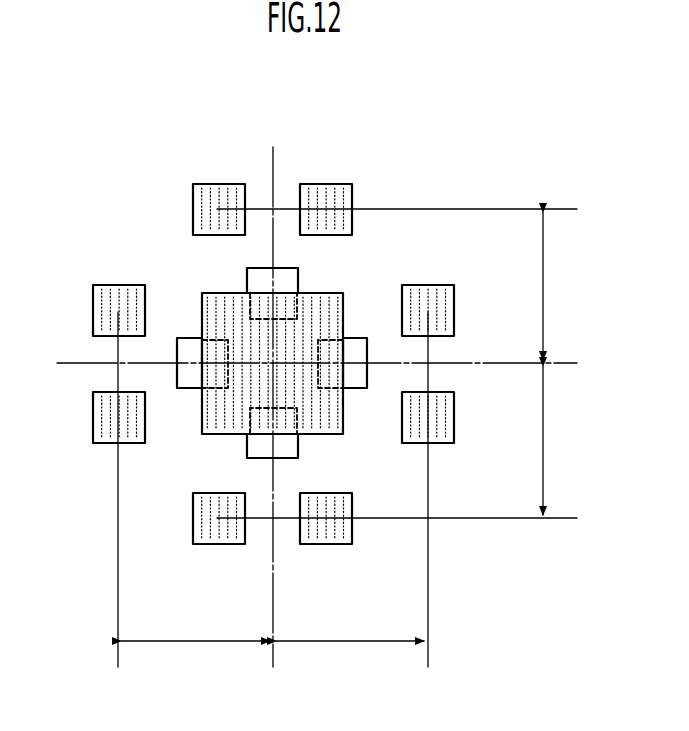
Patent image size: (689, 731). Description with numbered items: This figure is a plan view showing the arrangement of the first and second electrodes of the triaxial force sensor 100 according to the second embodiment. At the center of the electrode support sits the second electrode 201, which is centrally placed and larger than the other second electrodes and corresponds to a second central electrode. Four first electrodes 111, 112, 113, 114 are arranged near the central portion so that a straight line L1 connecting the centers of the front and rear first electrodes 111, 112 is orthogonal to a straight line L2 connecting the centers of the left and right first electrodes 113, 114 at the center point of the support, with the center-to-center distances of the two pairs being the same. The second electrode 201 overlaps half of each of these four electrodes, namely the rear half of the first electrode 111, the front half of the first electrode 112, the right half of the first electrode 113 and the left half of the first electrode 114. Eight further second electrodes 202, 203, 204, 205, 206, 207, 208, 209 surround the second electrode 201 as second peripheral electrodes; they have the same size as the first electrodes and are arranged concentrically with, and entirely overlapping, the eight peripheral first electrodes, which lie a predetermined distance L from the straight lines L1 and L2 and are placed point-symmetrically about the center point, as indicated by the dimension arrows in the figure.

The triaxial force sensor 100 is at (438, 157).
The second electrode 201 is at (202, 302).
The first electrode 111 is at (298, 445).
The first electrode 112 is at (298, 283).
The first electrode 113 is at (192, 390).
The first electrode 114 is at (355, 338).
The second electrode 202 is at (93, 423).
The second electrode 203 is at (93, 297).
The second electrode 204 is at (453, 423).
The second electrode 205 is at (453, 297).
The second electrode 206 is at (202, 545).
The second electrode 207 is at (343, 545).
The second electrode 208 is at (222, 184).
The second electrode 209 is at (335, 184).
The straight line L1 is at (273, 568).
The straight line L2 is at (68, 363).